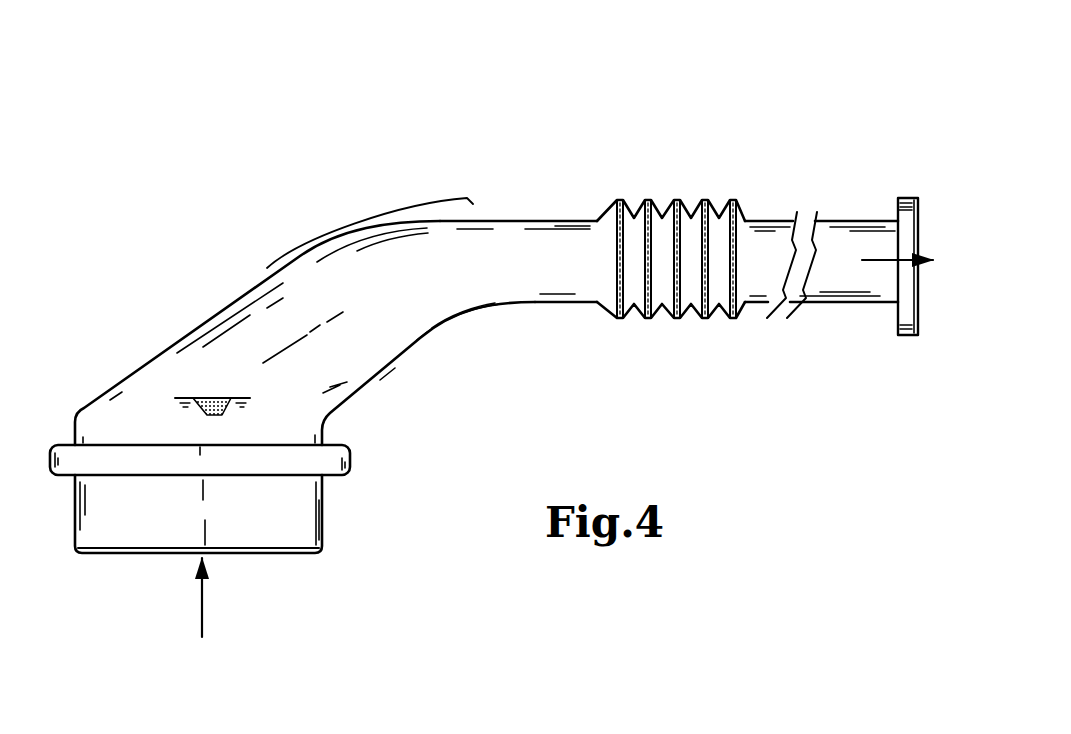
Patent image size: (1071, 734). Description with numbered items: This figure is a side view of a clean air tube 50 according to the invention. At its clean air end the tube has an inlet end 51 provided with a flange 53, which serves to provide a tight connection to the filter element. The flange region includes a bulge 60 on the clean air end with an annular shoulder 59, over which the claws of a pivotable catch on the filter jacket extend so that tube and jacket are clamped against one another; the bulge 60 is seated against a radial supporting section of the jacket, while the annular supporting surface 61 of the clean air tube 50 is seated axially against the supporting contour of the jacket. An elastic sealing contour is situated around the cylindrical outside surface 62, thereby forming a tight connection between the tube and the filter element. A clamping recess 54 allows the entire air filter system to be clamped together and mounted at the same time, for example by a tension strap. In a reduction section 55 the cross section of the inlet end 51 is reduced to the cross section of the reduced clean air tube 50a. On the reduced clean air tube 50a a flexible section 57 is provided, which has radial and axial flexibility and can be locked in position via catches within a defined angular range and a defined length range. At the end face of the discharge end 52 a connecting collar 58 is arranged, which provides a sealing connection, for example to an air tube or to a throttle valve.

The clean air tube 50 is at (402, 143).
The reduced clean air tube 50a is at (501, 229).
The inlet end 51 is at (119, 555).
The discharge end 52 is at (921, 308).
The flange 53 is at (370, 437).
The clamping recess 54 is at (211, 396).
The reduction section 55 is at (360, 209).
The flexible section 57 is at (597, 159).
The connecting collar 58 is at (906, 212).
The annular shoulder 59 is at (329, 439).
The bulge 60 is at (61, 444).
The annular supporting surface 61 is at (329, 478).
The cylindrical outside surface 62 is at (276, 528).